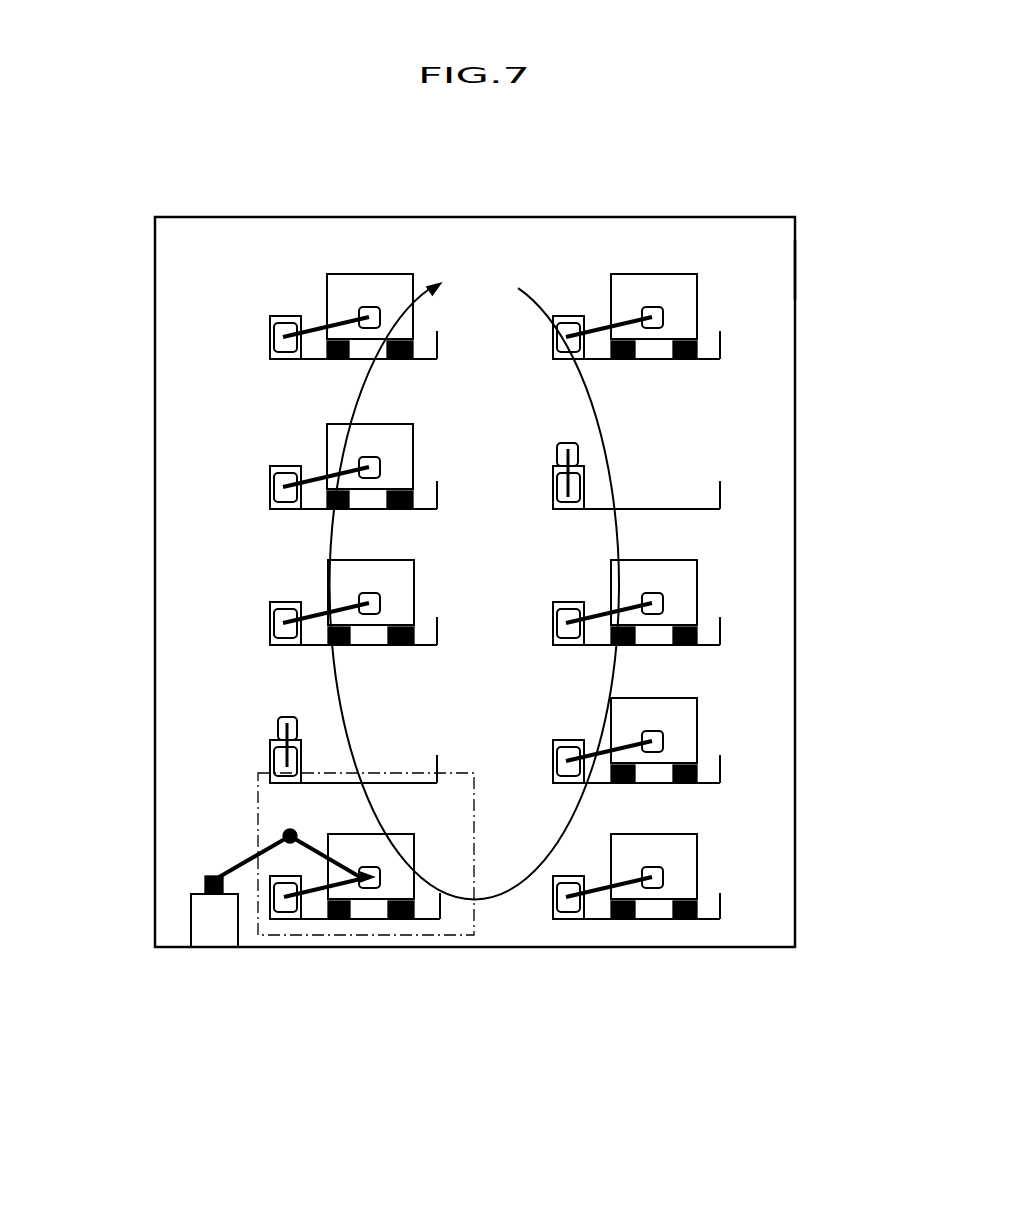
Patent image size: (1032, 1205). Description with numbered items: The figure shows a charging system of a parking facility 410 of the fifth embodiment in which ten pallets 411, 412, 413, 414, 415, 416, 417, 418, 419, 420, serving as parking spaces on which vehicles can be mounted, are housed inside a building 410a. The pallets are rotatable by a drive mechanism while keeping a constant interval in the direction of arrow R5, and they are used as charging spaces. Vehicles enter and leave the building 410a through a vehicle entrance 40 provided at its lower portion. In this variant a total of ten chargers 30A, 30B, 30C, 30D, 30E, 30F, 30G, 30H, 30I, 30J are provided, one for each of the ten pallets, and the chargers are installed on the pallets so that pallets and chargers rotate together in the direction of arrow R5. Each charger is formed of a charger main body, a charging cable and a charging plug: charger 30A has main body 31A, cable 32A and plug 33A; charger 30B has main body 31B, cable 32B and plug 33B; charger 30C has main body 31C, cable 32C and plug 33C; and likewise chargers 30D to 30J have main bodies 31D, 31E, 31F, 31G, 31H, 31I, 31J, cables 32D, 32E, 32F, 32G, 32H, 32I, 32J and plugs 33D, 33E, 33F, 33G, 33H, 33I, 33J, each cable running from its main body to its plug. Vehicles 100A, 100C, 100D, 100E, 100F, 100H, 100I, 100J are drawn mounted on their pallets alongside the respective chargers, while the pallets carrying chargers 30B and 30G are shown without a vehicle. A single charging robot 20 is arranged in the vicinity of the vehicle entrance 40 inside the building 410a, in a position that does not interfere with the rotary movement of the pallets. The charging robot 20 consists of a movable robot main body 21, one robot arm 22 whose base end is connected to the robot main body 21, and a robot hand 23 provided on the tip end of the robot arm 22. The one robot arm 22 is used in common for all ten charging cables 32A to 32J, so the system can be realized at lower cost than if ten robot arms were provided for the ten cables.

The parking facility 410 is at (118, 187).
The building 410a is at (795, 272).
The pallet 411 is at (474, 936).
The pallet 412 is at (437, 770).
The pallet 413 is at (437, 633).
The pallet 414 is at (437, 497).
The pallet 415 is at (437, 347).
The pallet 416 is at (720, 347).
The pallet 417 is at (720, 497).
The pallet 418 is at (720, 633).
The pallet 419 is at (720, 772).
The pallet 420 is at (720, 907).
The direction of arrow R5 is at (590, 390).
The charging robot 20 is at (217, 929).
The robot main body 21 is at (190, 912).
The robot arm 22 is at (205, 880).
The robot hand 23 is at (362, 900).
The vehicle entrance 40 is at (268, 937).
The charger 30A is at (265, 900).
The charger main body 31A is at (270, 882).
The charging cable 32A is at (284, 900).
The charging plug 33A is at (376, 892).
The vehicle 100A is at (340, 834).
The charger 30B is at (252, 715).
The charger main body 31B is at (270, 750).
The charging cable 32B is at (278, 728).
The charging plug 33B is at (282, 717).
The charger 30C is at (302, 613).
The charger main body 31C is at (270, 605).
The charging cable 32C is at (316, 616).
The charging plug 33C is at (372, 615).
The vehicle 100C is at (375, 560).
The charger 30D is at (332, 443).
The charger main body 31D is at (270, 470).
The charging cable 32D is at (316, 480).
The charging plug 33D is at (382, 467).
The vehicle 100D is at (405, 424).
The charger 30E is at (319, 263).
The charger main body 31E is at (270, 320).
The charging cable 32E is at (316, 330).
The charging plug 33E is at (380, 312).
The vehicle 100E is at (378, 274).
The charger 30F is at (618, 293).
The charger main body 31F is at (553, 345).
The charging cable 32F is at (600, 330).
The charging plug 33F is at (660, 308).
The vehicle 100F is at (670, 274).
The charger 30G is at (576, 446).
The charger main body 31G is at (553, 503).
The charging cable 32G is at (578, 456).
The charging plug 33G is at (565, 443).
The charger 30H is at (623, 582).
The charger main body 31H is at (553, 600).
The charging cable 32H is at (600, 616).
The charging plug 33H is at (660, 598).
The vehicle 100H is at (660, 560).
The charger 30I is at (621, 720).
The charger main body 31I is at (553, 740).
The charging cable 32I is at (600, 755).
The charging plug 33I is at (660, 735).
The vehicle 100I is at (660, 698).
The charger 30J is at (627, 858).
The charger main body 31J is at (553, 880).
The charging cable 32J is at (600, 890).
The charging plug 33J is at (658, 866).
The vehicle 100J is at (670, 820).